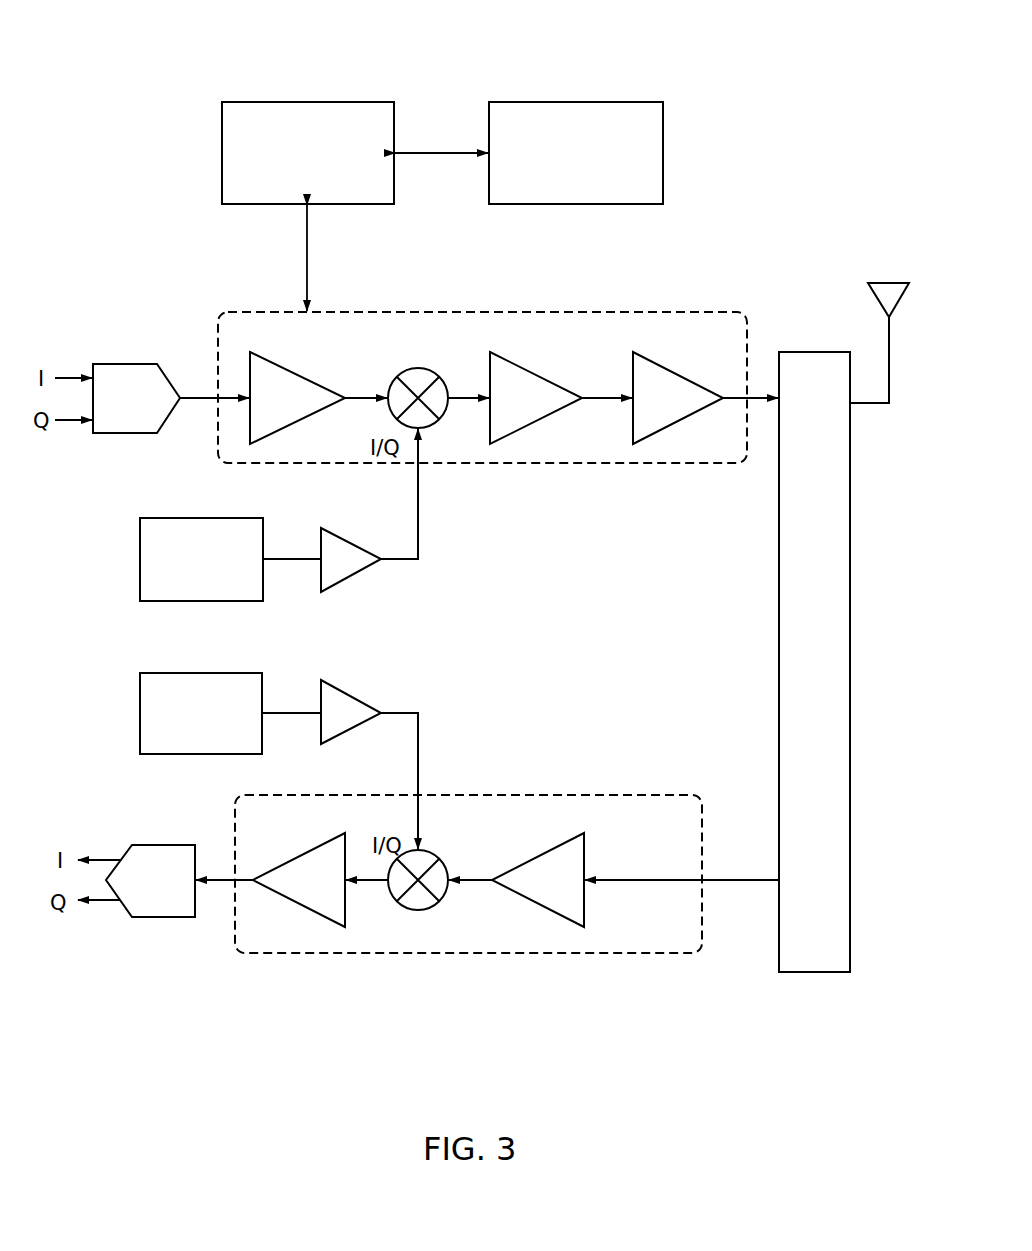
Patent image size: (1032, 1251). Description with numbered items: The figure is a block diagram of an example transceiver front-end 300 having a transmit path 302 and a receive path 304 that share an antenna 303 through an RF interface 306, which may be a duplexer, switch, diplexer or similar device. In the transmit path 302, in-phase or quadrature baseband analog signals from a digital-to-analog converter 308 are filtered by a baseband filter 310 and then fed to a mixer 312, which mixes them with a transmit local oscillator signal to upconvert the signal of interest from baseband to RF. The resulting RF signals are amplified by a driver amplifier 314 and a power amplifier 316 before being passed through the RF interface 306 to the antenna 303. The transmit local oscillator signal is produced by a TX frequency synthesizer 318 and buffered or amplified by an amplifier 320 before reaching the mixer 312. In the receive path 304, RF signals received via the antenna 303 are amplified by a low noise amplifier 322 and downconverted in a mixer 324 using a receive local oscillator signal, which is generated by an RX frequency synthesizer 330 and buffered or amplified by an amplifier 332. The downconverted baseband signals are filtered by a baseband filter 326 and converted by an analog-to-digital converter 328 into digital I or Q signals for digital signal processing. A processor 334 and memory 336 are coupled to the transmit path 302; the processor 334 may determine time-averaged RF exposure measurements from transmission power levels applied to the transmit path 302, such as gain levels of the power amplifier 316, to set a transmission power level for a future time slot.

The transceiver front-end 300 is at (742, 64).
The transmit (TX) path 302 is at (666, 312).
The antenna 303 is at (880, 283).
The receive (RX) path 304 is at (634, 795).
The RF interface 306 is at (807, 352).
The digital-to-analog converter (DAC) 308 is at (120, 364).
The baseband filter (BBF) 310 is at (307, 378).
The mixer 312 is at (418, 368).
The driver amplifier (DA) 314 is at (544, 378).
The power amplifier (PA) 316 is at (671, 368).
The TX frequency synthesizer 318 is at (229, 518).
The amplifier 320 is at (338, 534).
The low noise amplifier (LNA) 322 is at (586, 866).
The mixer 324 is at (439, 861).
The baseband filter (BBF) 326 is at (314, 843).
The analog-to-digital converter (ADC) 328 is at (161, 845).
The RX frequency synthesizer 330 is at (228, 673).
The amplifier 332 is at (338, 688).
The processor 334 is at (325, 102).
The memory 336 is at (594, 102).